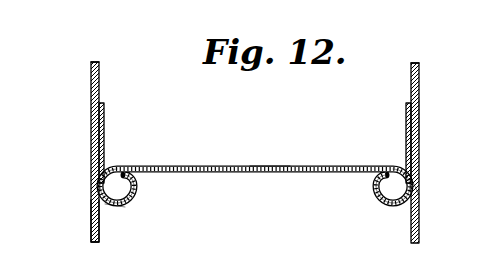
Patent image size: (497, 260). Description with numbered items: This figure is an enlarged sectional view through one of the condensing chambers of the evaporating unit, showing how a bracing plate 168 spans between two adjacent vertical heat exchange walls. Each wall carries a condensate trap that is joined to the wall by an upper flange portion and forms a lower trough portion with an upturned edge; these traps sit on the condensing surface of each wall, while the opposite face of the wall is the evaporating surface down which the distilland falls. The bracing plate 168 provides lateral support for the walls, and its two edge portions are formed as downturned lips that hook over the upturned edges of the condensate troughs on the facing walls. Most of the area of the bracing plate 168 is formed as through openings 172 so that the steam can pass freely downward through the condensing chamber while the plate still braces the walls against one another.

The bracing plate 168 is at (187, 166).
The through opening 172 is at (268, 165).